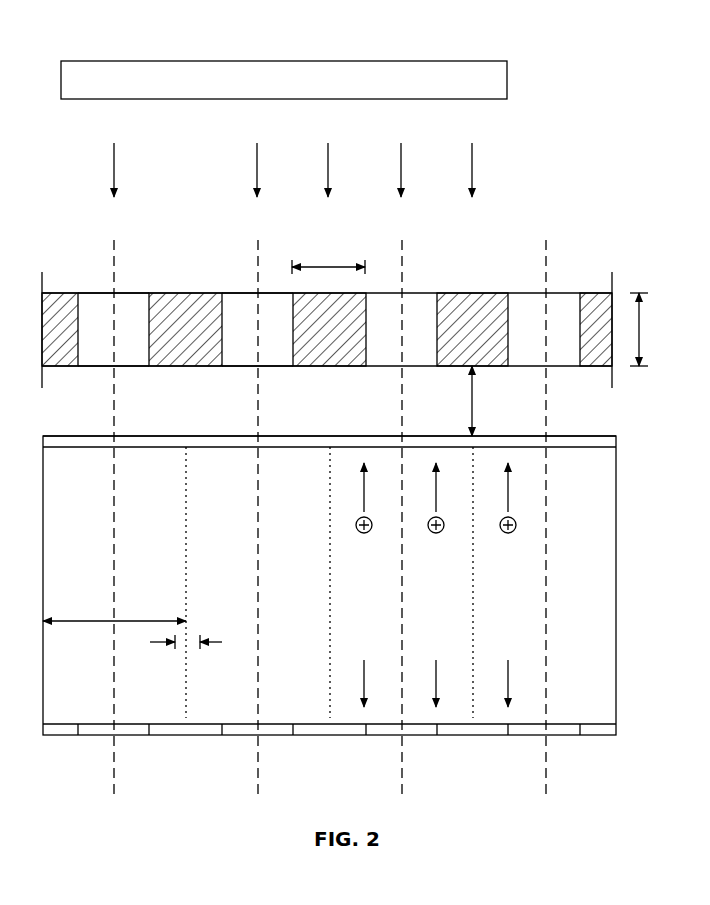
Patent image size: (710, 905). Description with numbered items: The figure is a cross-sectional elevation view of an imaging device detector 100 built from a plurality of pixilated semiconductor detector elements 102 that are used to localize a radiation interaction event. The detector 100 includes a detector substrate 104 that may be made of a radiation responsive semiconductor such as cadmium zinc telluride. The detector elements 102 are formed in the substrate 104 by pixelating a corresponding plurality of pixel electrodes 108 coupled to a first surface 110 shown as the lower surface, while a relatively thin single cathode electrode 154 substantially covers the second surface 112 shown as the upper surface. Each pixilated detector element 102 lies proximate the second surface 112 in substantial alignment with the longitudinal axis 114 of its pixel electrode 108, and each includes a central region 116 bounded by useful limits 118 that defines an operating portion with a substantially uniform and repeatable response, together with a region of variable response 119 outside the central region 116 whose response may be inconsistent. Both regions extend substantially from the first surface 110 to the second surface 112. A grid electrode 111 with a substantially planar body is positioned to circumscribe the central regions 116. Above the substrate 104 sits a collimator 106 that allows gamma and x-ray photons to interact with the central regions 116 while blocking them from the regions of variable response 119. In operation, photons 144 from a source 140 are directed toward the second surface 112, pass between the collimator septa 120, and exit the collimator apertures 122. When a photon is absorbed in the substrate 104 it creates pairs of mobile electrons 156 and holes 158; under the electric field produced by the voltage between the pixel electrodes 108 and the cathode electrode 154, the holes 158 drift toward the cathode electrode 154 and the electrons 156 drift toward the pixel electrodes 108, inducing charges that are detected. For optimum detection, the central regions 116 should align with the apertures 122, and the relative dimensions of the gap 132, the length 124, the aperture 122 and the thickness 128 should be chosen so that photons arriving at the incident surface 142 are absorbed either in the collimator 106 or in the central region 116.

The imaging device detector 100 is at (592, 258).
The pixilated semiconductor detector element 102 is at (174, 650).
The detector substrate 104 is at (618, 585).
The collimator 106 is at (38, 312).
The pixel electrode 108 is at (135, 737).
The first surface 110 is at (596, 724).
The grid electrode 111 is at (472, 737).
The second surface 112 is at (602, 448).
The longitudinal axis 114 is at (262, 405).
The central region 116 is at (100, 487).
The useful limit 118 is at (186, 582).
The region of variable response 119 is at (222, 643).
The collimator septum 120 is at (104, 293).
The collimator aperture 122 is at (106, 367).
The length 124 is at (645, 320).
The thickness 128 is at (320, 267).
The gap 132 is at (478, 400).
The source 140 is at (436, 61).
The incident surface 142 is at (475, 293).
The photons 144 is at (116, 172).
The cathode electrode 154 is at (555, 436).
The electrons 156 is at (380, 642).
The holes 158 is at (444, 528).